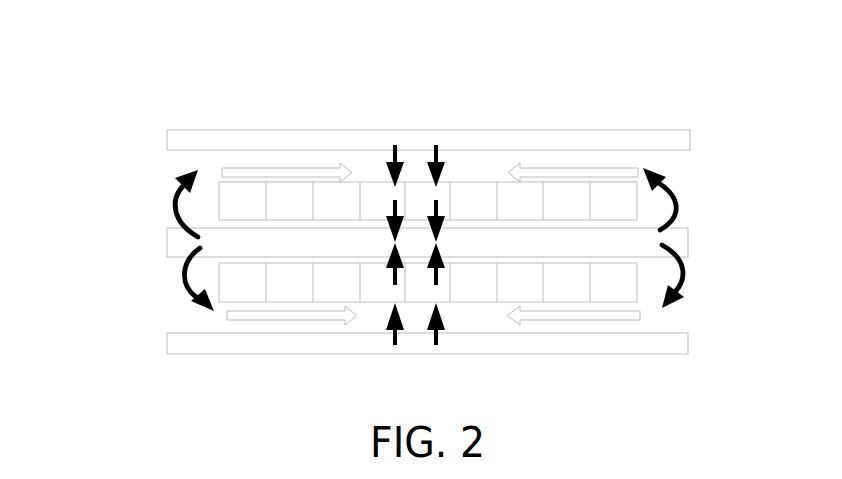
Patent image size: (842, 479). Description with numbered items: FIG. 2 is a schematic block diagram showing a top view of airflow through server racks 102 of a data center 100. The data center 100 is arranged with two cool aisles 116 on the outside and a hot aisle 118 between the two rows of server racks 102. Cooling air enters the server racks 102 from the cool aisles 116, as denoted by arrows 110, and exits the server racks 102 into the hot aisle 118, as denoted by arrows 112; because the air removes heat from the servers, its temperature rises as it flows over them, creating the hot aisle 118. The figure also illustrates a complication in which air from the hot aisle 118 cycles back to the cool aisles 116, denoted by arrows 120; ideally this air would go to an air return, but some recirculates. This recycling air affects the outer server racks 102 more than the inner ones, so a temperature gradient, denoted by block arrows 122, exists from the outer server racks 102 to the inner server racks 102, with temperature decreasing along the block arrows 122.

The data center 100 is at (108, 71).
The server racks 102 is at (220, 202).
The arrows denoting air entering 110 is at (485, 370).
The arrows denoting air exiting 112 is at (432, 217).
The cool aisles 116 is at (167, 138).
The hot aisle 118 is at (167, 238).
The arrows denoting recycling air 120 is at (178, 195).
The block arrows denoting temperature gradient 122 is at (290, 168).